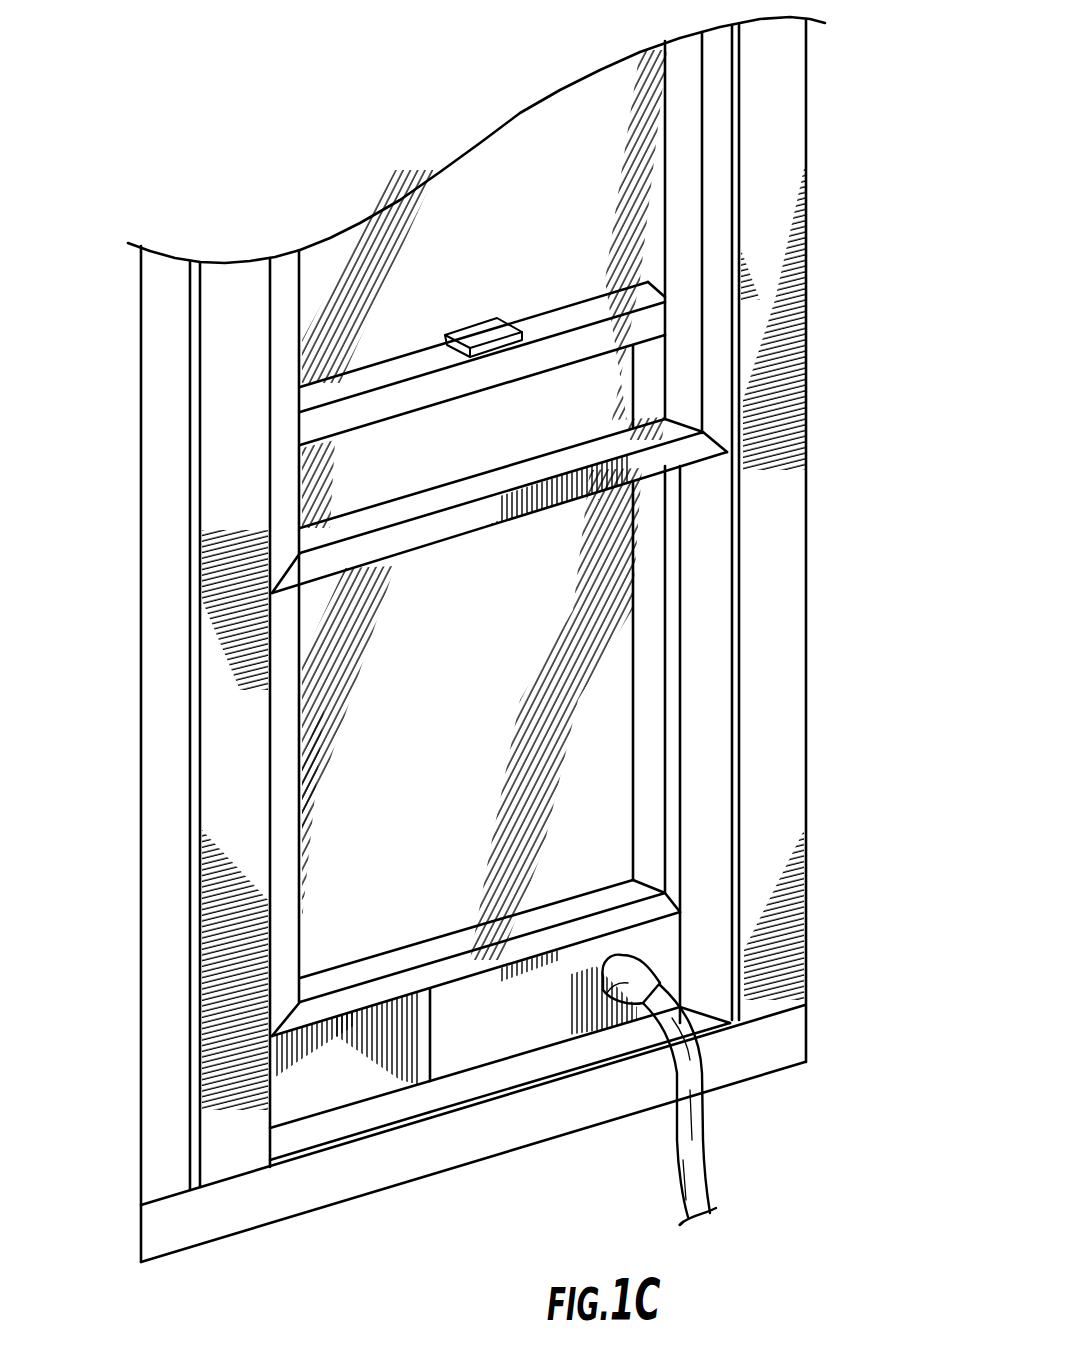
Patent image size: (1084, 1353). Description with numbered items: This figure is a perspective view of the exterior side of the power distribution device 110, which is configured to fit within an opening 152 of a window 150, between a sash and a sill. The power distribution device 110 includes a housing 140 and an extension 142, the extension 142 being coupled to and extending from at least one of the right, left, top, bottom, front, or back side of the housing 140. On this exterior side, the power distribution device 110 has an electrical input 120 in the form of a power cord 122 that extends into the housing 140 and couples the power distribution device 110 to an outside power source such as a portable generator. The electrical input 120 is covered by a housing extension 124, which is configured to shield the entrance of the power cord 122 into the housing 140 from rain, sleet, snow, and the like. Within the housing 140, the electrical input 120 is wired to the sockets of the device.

The power distribution device 110 is at (200, 1106).
The window 150 is at (818, 455).
The opening 152 is at (667, 893).
The electrical input 120 is at (700, 980).
The power cord 122 is at (693, 1171).
The housing extension 124 is at (627, 985).
The housing 140 is at (463, 1047).
The extension 142 is at (292, 1097).